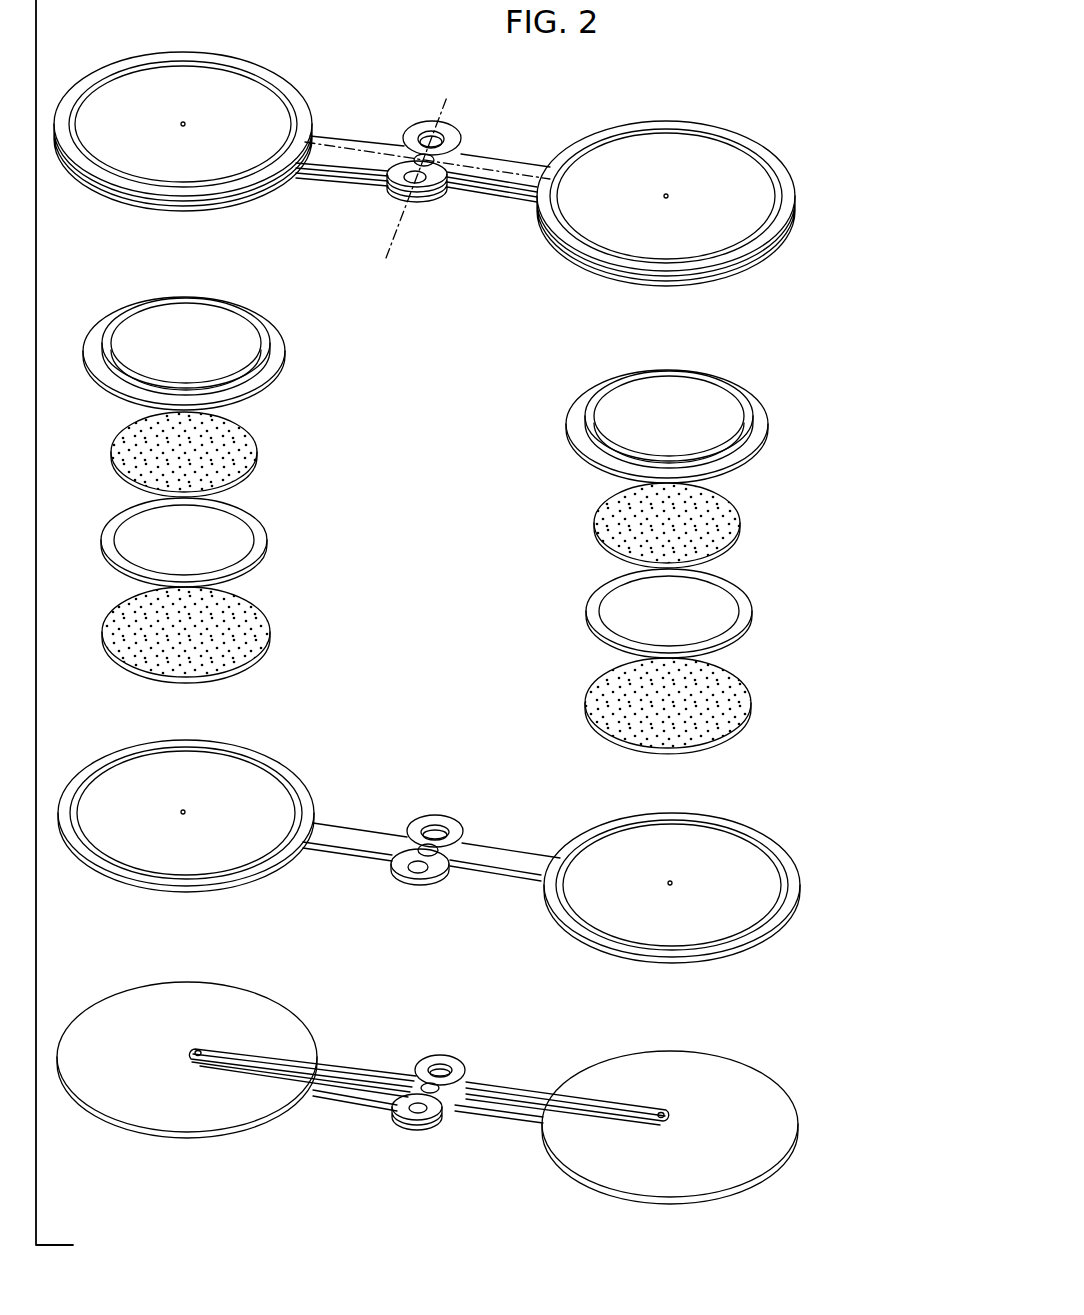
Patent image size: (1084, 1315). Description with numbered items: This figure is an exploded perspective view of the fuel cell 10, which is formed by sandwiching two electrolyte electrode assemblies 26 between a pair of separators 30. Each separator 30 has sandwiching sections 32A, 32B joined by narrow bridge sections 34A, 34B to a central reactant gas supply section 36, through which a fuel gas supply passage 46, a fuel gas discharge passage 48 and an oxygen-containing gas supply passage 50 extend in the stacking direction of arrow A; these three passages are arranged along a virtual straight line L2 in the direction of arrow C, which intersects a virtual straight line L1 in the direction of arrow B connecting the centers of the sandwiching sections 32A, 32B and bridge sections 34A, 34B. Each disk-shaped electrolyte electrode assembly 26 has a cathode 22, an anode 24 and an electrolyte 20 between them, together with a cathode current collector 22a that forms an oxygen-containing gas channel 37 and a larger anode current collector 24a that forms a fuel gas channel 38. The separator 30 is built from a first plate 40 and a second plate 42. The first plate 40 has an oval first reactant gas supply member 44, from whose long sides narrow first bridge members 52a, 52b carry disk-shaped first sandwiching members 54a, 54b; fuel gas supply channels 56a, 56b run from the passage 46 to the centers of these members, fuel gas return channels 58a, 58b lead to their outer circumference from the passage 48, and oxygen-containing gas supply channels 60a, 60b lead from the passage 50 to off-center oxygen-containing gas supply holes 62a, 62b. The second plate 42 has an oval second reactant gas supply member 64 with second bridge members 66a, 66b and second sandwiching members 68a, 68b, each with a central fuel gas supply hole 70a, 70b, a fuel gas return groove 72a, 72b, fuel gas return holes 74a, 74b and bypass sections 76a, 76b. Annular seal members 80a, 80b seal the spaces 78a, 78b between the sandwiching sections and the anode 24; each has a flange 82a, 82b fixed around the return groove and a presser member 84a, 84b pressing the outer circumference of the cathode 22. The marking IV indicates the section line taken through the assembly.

The fuel cell 10 is at (686, 64).
The separator 30 is at (433, 627).
The sandwiching section 32A is at (713, 124).
The sandwiching section 32B is at (291, 77).
The bridge section 34A is at (518, 159).
The bridge section 34B is at (344, 134).
The reactant gas supply section 36 is at (430, 120).
The fuel gas supply passage 46 is at (420, 196).
The fuel gas discharge passage 48 is at (399, 186).
The oxygen-containing gas supply passage 50 is at (441, 129).
The virtual straight line L1 is at (328, 176).
The virtual straight line L2 is at (411, 189).
The electrolyte 20 is at (596, 613).
The cathode 22 is at (612, 600).
The anode 24 is at (592, 640).
The cathode current collector 22a is at (252, 440).
The anode current collector 24a is at (252, 620).
The electrolyte electrode assembly 26 is at (283, 514).
The oxygen-containing gas channel 37 is at (716, 537).
The fuel gas channel 38 is at (726, 727).
The space 78a is at (722, 457).
The space 78b is at (121, 384).
The seal member 80a is at (592, 408).
The seal member 80b is at (259, 329).
The flange 82a is at (577, 439).
The flange 82b is at (270, 364).
The presser member 84a is at (729, 392).
The presser member 84b is at (121, 321).
The first plate 40 is at (439, 1098).
The second plate 42 is at (429, 873).
The first reactant gas supply member 44 is at (392, 1126).
The second reactant gas supply member 64 is at (421, 813).
The second bridge member 66a is at (502, 857).
The second bridge member 66b is at (352, 830).
The second sandwiching member 68a is at (701, 817).
The second sandwiching member 68b is at (291, 773).
The fuel gas supply hole 70a is at (670, 880).
The fuel gas supply hole 70b is at (184, 808).
The fuel gas return groove 72a is at (565, 913).
The fuel gas return groove 72b is at (240, 876).
The fuel gas return hole 74a is at (563, 868).
The fuel gas return hole 74b is at (290, 832).
The bypass section 76a is at (566, 881).
The bypass section 76b is at (302, 856).
The first bridge member 52a is at (493, 1125).
The first bridge member 52b is at (351, 1063).
The first sandwiching member 54a is at (749, 1178).
The first sandwiching member 54b is at (284, 1022).
The fuel gas supply channel 56a is at (626, 1128).
The fuel gas supply channel 56b is at (220, 1068).
The fuel gas return channel 58a is at (562, 1093).
The fuel gas return channel 58b is at (302, 1063).
The oxygen-containing gas supply channel 60a is at (610, 1110).
The oxygen-containing gas supply channel 60b is at (226, 1050).
The oxygen-containing gas supply hole 62a is at (665, 1112).
The oxygen-containing gas supply hole 62b is at (199, 1048).
The section line IV- IV is at (414, 1073).
The arrow A is at (103, 1163).
The arrow B is at (170, 1238).
The arrow C is at (155, 1150).